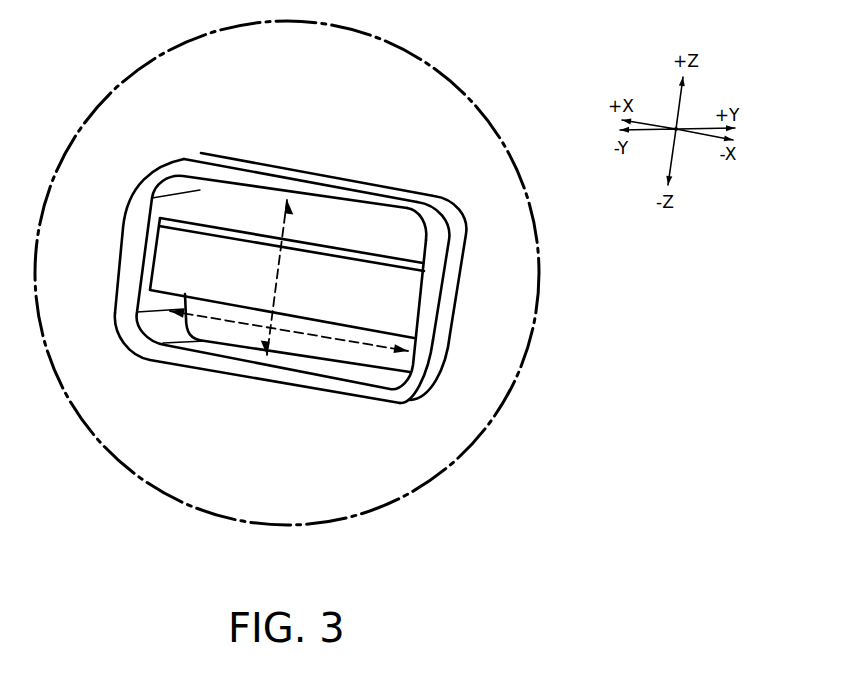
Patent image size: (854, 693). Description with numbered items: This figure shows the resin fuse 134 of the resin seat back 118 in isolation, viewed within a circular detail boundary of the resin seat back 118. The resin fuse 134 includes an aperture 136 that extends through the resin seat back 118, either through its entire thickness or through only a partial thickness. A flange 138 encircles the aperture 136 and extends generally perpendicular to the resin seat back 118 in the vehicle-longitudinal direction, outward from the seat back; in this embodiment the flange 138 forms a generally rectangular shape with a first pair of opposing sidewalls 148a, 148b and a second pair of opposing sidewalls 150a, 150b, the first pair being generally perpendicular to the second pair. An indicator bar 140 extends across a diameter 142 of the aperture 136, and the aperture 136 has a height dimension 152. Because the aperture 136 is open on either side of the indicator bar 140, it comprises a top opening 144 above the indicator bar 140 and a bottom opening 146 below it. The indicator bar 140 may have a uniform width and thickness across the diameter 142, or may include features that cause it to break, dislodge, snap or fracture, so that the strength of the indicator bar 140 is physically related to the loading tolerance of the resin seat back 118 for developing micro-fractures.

The resin seat back 118 is at (146, 92).
The resin fuse 134 is at (465, 172).
The aperture 136 is at (243, 212).
The flange 138 is at (431, 332).
The indicator bar 140 is at (370, 318).
The diameter 142 is at (207, 317).
The top opening 144 is at (414, 243).
The bottom opening 146 is at (313, 349).
The first opposing sidewall 148a is at (316, 185).
The first opposing sidewall 148b is at (195, 361).
The second opposing sidewall 150a is at (125, 243).
The second opposing sidewall 150b is at (434, 303).
The height dimension 152 is at (289, 216).